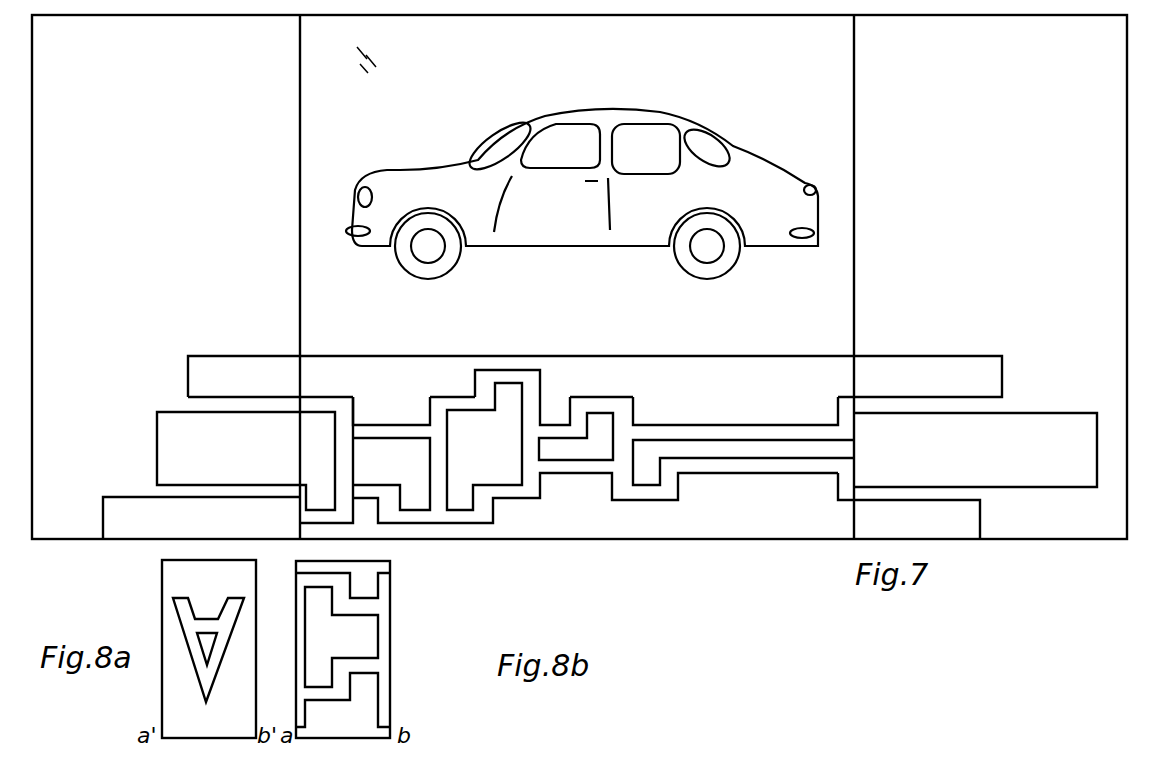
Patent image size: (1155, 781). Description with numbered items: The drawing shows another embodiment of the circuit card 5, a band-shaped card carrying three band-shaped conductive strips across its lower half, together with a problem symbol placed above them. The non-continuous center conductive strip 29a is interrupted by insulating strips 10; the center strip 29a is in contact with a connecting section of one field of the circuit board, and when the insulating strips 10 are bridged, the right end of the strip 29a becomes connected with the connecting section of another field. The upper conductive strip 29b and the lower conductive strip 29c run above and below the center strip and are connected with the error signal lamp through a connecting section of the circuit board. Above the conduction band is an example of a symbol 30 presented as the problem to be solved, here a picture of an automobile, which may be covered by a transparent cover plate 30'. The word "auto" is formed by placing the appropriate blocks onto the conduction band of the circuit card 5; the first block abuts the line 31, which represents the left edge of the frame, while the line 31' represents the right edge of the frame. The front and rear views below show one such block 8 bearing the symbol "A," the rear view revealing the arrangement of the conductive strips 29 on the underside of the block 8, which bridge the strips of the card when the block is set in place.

In FIG. 7, the circuit card 5 is at (767, 528).
In FIG. 8A, the block 8 is at (170, 582).
In FIG. 7, the insulating strips 10 is at (350, 410).
In FIG. 8B, the conductive strips 29 is at (382, 568).
In FIG. 7, the center conductive strip 29a is at (176, 428).
In FIG. 7, the upper conductive strip 29b is at (214, 364).
In FIG. 7, the lower conductive strip 29c is at (573, 513).
In FIG. 7, the symbol 30 is at (582, 194).
In FIG. 7, the transparent cover plate 30' is at (307, 66).
In FIG. 7, the line 31 is at (269, 277).
In FIG. 7, the line 31' is at (889, 277).